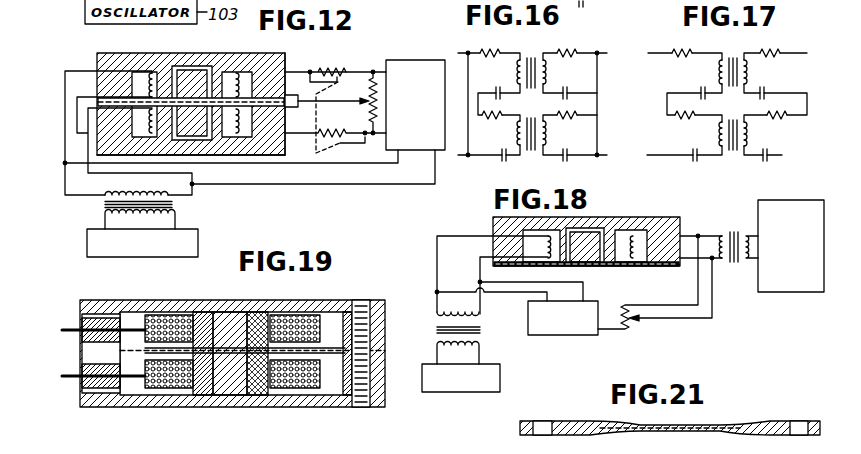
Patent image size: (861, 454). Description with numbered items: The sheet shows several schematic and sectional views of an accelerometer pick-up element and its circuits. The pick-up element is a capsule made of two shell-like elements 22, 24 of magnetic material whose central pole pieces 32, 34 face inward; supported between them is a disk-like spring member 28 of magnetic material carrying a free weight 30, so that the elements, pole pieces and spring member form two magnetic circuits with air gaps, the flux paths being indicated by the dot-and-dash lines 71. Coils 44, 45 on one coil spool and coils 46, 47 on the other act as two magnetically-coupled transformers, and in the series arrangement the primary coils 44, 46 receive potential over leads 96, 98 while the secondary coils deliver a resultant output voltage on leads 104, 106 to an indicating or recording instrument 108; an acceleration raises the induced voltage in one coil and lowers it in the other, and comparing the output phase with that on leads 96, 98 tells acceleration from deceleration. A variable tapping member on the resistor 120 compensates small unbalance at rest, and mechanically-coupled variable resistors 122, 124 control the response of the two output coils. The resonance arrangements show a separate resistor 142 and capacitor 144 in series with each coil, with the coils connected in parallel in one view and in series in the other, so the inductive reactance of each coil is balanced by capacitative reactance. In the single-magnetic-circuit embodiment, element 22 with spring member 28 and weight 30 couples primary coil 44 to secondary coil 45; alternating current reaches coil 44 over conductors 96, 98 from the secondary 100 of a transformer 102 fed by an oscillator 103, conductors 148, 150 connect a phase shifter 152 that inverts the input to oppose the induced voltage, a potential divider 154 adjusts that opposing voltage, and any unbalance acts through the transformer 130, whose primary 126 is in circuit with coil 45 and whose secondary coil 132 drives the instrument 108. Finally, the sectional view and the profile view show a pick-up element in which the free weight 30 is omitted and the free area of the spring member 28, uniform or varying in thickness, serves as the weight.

In FIG. 12, the shell-like element 22 is at (97, 57).
In FIG. 18, the shell-like element 22 is at (492, 227).
In FIG. 19, the shell-like element 22 is at (95, 299).
In FIG. 12, the shell-like element 24 is at (197, 156).
In FIG. 19, the shell-like element 24 is at (112, 407).
In FIG. 12, the spring member 28 is at (158, 98).
In FIG. 18, the spring member 28 is at (617, 262).
In FIG. 19, the spring member 28 is at (262, 312).
In FIG. 21, the spring member 28 is at (568, 420).
In FIG. 12, the free weight 30 is at (193, 72).
In FIG. 18, the free weight 30 is at (590, 262).
In FIG. 19, the pole piece 32 is at (226, 312).
In FIG. 19, the pole piece 34 is at (232, 372).
In FIG. 12, the primary coil 44 is at (150, 72).
In FIG. 16, the primary coil 44 is at (515, 66).
In FIG. 17, the primary coil 44 is at (718, 72).
In FIG. 18, the primary coil 44 is at (545, 265).
In FIG. 19, the primary coil 44 is at (155, 300).
In FIG. 12, the secondary coil 45 is at (238, 73).
In FIG. 16, the secondary coil 45 is at (548, 70).
In FIG. 17, the secondary coil 45 is at (750, 70).
In FIG. 18, the secondary coil 45 is at (632, 245).
In FIG. 19, the secondary coil 45 is at (172, 312).
In FIG. 12, the primary coil 46 is at (150, 122).
In FIG. 16, the primary coil 46 is at (515, 134).
In FIG. 17, the primary coil 46 is at (718, 128).
In FIG. 19, the primary coil 46 is at (158, 398).
In FIG. 12, the secondary coil 47 is at (238, 134).
In FIG. 16, the secondary coil 47 is at (549, 134).
In FIG. 17, the secondary coil 47 is at (750, 133).
In FIG. 19, the secondary coil 47 is at (180, 388).
In FIG. 12, the flux paths 71 is at (265, 120).
In FIG. 19, the flux paths 71 is at (322, 300).
In FIG. 12, the lead 96 is at (65, 110).
In FIG. 18, the lead 96 is at (437, 251).
In FIG. 12, the lead 98 is at (88, 142).
In FIG. 18, the lead 98 is at (480, 268).
In FIG. 12, the transformer secondary 100 is at (103, 200).
In FIG. 18, the transformer secondary 100 is at (437, 310).
In FIG. 12, the transformer 102 is at (180, 204).
In FIG. 18, the transformer 102 is at (481, 329).
In FIG. 12, the oscillator 103 is at (198, 237).
In FIG. 18, the oscillator 103 is at (502, 368).
In FIG. 12, the output lead 104 is at (378, 50).
In FIG. 12, the output lead 106 is at (382, 136).
In FIG. 12, the indicating or recording instrument 108 is at (396, 60).
In FIG. 18, the indicating or recording instrument 108 is at (773, 200).
In FIG. 12, the resistor 120 is at (370, 98).
In FIG. 12, the variable resistor 122 is at (333, 65).
In FIG. 12, the variable resistor 124 is at (354, 133).
In FIG. 18, the transformer primary 126 is at (724, 238).
In FIG. 18, the transformer 130 is at (738, 263).
In FIG. 18, the transformer secondary coil 132 is at (748, 236).
In FIG. 16, the resistor 142 is at (500, 50).
In FIG. 17, the resistor 142 is at (683, 53).
In FIG. 16, the capacitor 144 is at (506, 86).
In FIG. 17, the capacitor 144 is at (700, 91).
In FIG. 18, the conductor 148 is at (540, 300).
In FIG. 18, the conductor 150 is at (590, 288).
In FIG. 18, the phase shifter 152 is at (580, 335).
In FIG. 18, the potential divider 154 is at (632, 323).